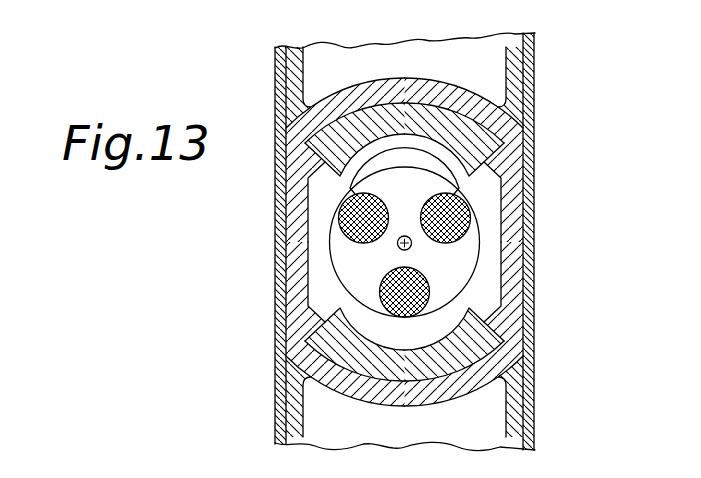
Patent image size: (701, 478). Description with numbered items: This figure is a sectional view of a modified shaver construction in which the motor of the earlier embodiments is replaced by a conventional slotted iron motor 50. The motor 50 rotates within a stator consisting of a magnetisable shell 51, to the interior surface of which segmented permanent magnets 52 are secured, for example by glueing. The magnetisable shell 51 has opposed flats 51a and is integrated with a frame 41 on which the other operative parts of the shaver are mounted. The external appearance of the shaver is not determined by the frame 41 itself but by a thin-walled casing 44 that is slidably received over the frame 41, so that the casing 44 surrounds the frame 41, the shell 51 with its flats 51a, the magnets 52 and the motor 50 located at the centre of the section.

The frame 41 is at (515, 74).
The thin-walled casing 44 is at (528, 333).
The slotted iron motor 50 is at (465, 255).
The magnetisable shell 51 is at (475, 137).
The opposed flats 51a is at (526, 207).
The segmented permanent magnets 52 is at (470, 167).